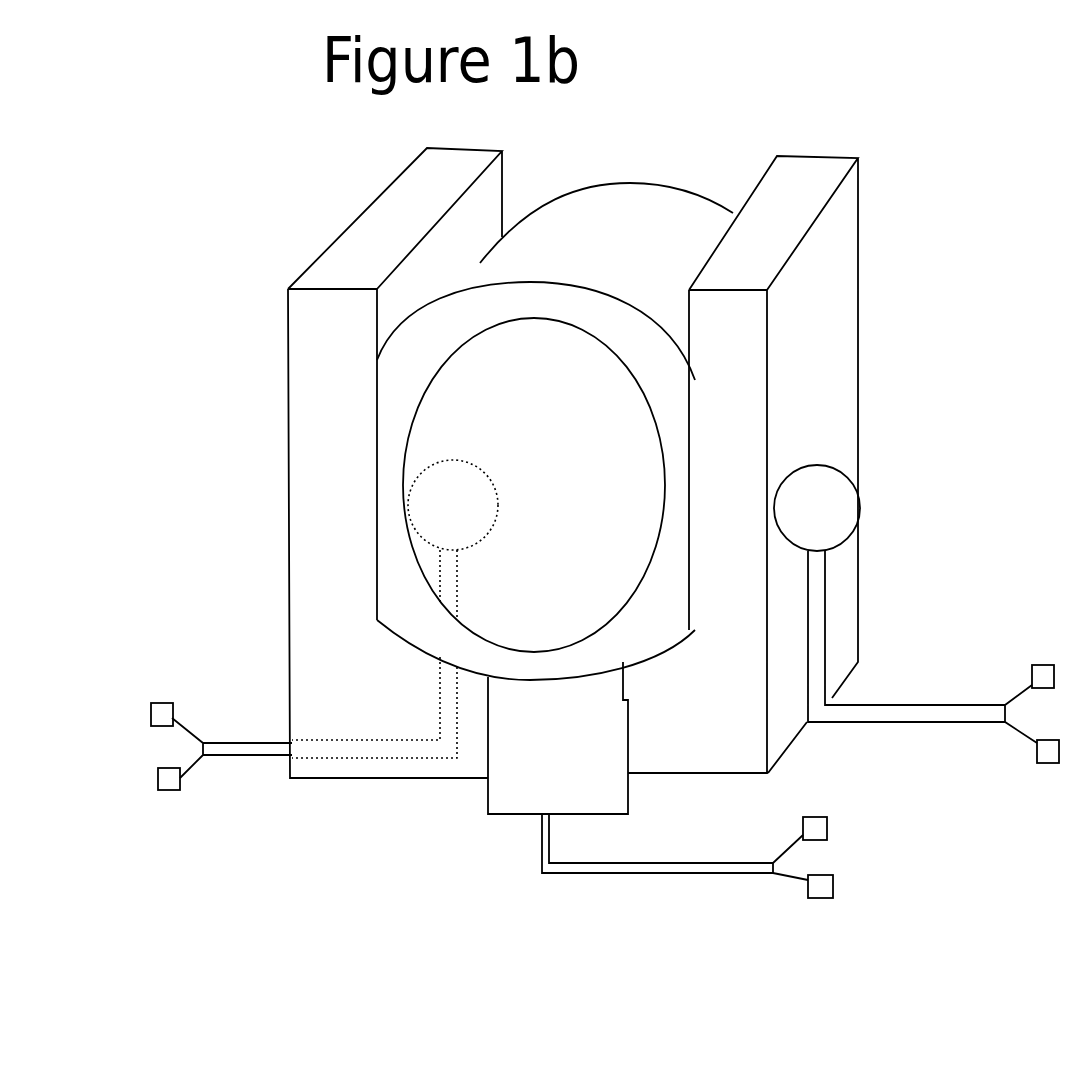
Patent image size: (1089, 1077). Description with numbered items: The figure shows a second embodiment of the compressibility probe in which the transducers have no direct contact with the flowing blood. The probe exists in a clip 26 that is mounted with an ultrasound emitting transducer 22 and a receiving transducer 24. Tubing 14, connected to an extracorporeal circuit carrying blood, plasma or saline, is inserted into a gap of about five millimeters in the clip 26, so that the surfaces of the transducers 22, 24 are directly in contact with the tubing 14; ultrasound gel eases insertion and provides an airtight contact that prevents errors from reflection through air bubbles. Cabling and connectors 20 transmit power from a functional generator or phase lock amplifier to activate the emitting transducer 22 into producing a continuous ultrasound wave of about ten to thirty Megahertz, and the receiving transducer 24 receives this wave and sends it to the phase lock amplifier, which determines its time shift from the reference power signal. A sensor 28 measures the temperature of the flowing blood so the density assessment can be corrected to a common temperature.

The tubing 14 is at (687, 423).
The clip 26 is at (367, 240).
The receiving transducer 24 is at (435, 508).
The ultrasound emitting transducer 22 is at (828, 512).
The cabling and connectors 20 is at (226, 747).
The sensor 28 is at (542, 847).